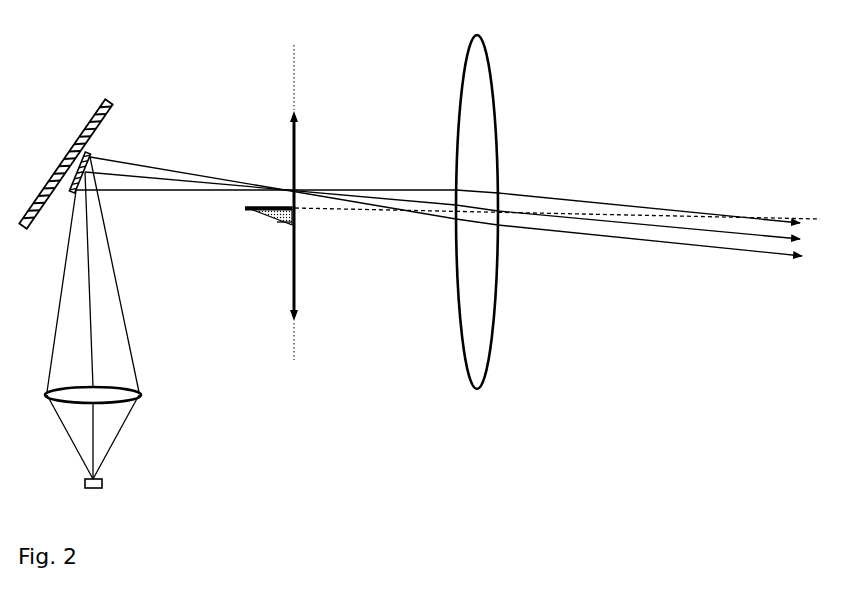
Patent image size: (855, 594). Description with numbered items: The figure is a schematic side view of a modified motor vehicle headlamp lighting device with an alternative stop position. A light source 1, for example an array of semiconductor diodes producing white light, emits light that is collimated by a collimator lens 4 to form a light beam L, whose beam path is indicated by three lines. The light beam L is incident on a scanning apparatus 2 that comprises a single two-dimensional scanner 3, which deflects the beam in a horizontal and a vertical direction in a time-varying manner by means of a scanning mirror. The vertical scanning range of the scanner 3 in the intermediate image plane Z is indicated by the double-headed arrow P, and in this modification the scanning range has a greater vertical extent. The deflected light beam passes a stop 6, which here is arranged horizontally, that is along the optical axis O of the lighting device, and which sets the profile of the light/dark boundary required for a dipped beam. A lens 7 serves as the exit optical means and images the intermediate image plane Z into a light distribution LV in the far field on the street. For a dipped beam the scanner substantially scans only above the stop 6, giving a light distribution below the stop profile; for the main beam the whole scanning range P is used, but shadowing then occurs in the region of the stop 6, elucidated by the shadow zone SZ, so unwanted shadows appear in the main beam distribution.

The light source 1 is at (103, 483).
The scanning apparatus 2 is at (86, 88).
The 2D scanner 3 is at (91, 154).
The collimator lens 4 is at (150, 384).
The stop 6 is at (267, 205).
The lens 7 is at (489, 58).
The light beam L is at (60, 298).
The intermediate image plane Z is at (291, 189).
The scanning range P is at (297, 162).
The shadow zone SZ is at (277, 222).
The optical axis O is at (330, 210).
The light distribution LV is at (448, 206).